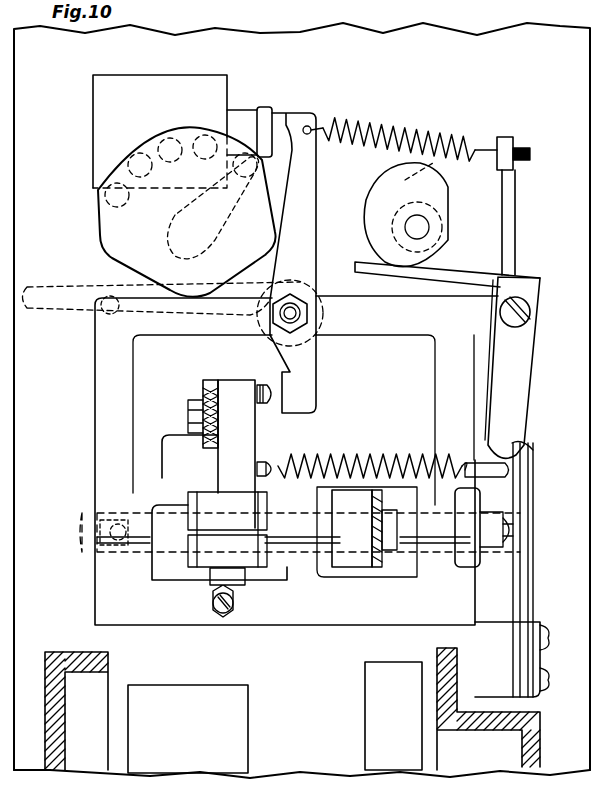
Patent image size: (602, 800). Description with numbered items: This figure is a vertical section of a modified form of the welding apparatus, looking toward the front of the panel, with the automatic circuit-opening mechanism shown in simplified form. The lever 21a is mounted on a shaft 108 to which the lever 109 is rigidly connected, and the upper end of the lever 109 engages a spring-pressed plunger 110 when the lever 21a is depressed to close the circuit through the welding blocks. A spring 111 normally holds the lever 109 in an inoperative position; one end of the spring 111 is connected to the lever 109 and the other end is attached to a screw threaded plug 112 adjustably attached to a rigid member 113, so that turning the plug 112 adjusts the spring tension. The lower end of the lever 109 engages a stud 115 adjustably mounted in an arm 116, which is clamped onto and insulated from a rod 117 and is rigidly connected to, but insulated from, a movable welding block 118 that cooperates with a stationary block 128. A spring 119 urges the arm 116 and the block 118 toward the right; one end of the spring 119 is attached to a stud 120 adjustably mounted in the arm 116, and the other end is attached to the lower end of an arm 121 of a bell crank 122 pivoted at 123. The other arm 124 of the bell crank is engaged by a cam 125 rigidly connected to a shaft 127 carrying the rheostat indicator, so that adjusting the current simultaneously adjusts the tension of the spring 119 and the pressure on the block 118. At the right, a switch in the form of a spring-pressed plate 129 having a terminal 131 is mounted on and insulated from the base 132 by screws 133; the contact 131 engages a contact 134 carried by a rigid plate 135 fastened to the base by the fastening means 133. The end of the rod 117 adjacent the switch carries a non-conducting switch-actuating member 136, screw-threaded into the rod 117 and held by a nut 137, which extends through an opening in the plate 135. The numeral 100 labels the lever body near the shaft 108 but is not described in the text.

The lever 21a is at (88, 315).
The lever arm lower portion 100 is at (318, 383).
The shaft 108 is at (298, 318).
The lever 109 is at (305, 202).
The spring-pressed plunger 110 is at (262, 107).
The spring 111 is at (375, 128).
The screw threaded plug 112 is at (520, 150).
The rigid member 113 is at (514, 198).
The stud 115 is at (267, 393).
The arm 116 is at (230, 393).
The rod 117 is at (300, 542).
The movable welding block 118 is at (185, 473).
The spring 119 is at (365, 455).
The stud 120 is at (275, 462).
The arm of bell crank 121 is at (495, 392).
The bell crank 122 is at (524, 362).
The pivot 123 is at (530, 312).
The arm of bell crank 124 is at (380, 270).
The cam 125 is at (371, 209).
The shaft 127 is at (417, 227).
The stationary block 128 is at (355, 567).
The spring-pressed plate 129 is at (537, 502).
The terminal 131 is at (533, 450).
The base 132 is at (490, 640).
The screws 133 is at (548, 628).
The contact 134 is at (534, 438).
The rigid plate 135 is at (517, 572).
The switch-actuating member 136 is at (508, 530).
The nut 137 is at (487, 500).